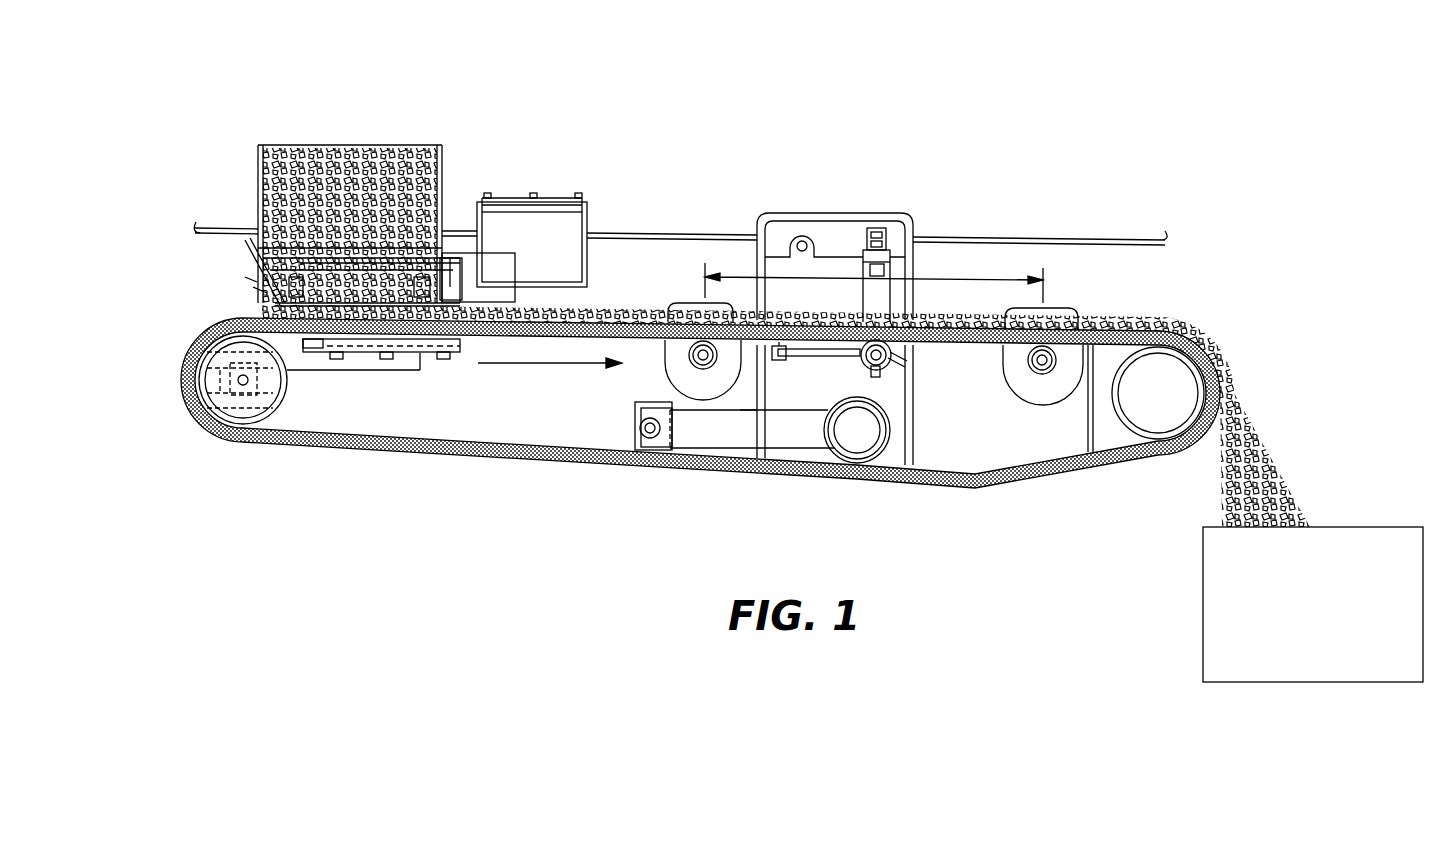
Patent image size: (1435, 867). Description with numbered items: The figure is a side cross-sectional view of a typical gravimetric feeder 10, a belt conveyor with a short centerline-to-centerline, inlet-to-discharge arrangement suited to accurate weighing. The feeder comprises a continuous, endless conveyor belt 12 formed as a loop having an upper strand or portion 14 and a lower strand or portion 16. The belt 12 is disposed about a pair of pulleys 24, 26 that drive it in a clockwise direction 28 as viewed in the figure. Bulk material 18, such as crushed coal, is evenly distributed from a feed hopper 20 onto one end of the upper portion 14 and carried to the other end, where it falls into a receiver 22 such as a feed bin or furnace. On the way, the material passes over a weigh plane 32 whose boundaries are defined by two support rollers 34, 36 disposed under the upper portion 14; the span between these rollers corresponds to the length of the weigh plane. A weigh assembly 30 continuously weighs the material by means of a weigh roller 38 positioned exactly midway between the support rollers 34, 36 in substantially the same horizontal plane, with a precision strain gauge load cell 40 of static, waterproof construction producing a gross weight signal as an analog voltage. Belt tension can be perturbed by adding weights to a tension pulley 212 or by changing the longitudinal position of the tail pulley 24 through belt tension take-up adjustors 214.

The gravimetric feeder 10 is at (662, 133).
The conveyor belt 12 is at (208, 323).
The upper strand or portion 14 is at (652, 318).
The lower strand or portion 16 is at (627, 470).
The bulk material 18 is at (405, 150).
The feed hopper 20 is at (250, 164).
The receiver 22 is at (1245, 604).
The tail pulley 24 is at (238, 404).
The pulley 26 is at (1157, 410).
The clockwise direction 28 is at (538, 365).
The weigh assembly 30 is at (860, 266).
The weigh plane 32 is at (941, 277).
The support roller 34 is at (703, 370).
The support roller 36 is at (1042, 372).
The weigh roller 38 is at (882, 368).
The strain gauge load cell 40 is at (875, 262).
The tension pulley 212 is at (857, 435).
The belt tension take-up adjustors 214 is at (188, 378).